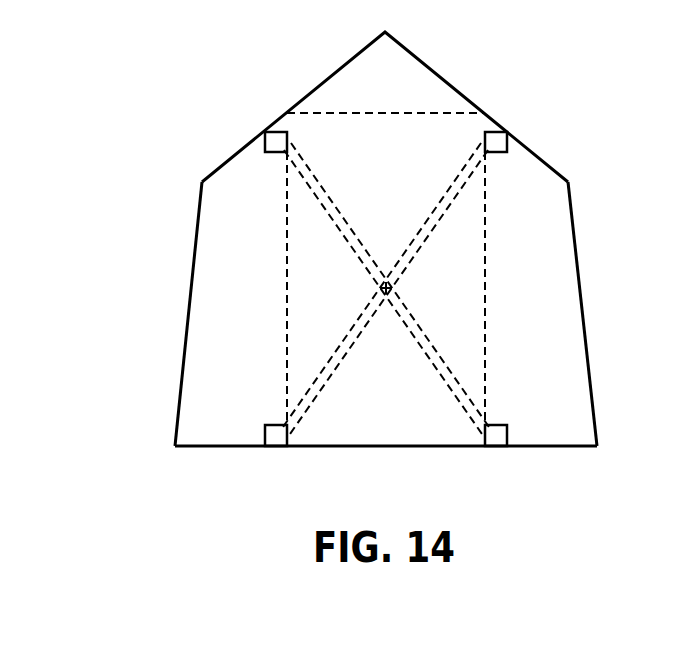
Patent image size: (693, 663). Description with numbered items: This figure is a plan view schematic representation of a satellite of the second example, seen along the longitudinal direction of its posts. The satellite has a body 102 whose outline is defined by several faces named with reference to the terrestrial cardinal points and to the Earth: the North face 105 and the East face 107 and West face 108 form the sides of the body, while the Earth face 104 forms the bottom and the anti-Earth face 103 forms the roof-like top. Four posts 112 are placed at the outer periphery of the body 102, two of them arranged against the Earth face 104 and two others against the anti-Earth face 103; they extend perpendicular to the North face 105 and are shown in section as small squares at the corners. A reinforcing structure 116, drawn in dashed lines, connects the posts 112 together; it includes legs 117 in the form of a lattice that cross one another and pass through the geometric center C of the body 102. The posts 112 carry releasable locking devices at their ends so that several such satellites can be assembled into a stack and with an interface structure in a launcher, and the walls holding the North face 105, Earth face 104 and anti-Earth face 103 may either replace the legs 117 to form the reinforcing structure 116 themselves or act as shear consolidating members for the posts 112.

The body 102 is at (278, 247).
The anti-Earth face 103 is at (420, 112).
The Earth face 104 is at (400, 447).
The North face 105 is at (562, 377).
The East face 107 is at (229, 270).
The West face 108 is at (487, 230).
The posts 112 is at (272, 130).
The reinforcing structure 116 is at (328, 172).
The legs 117 is at (350, 248).
The geometric center C is at (385, 292).